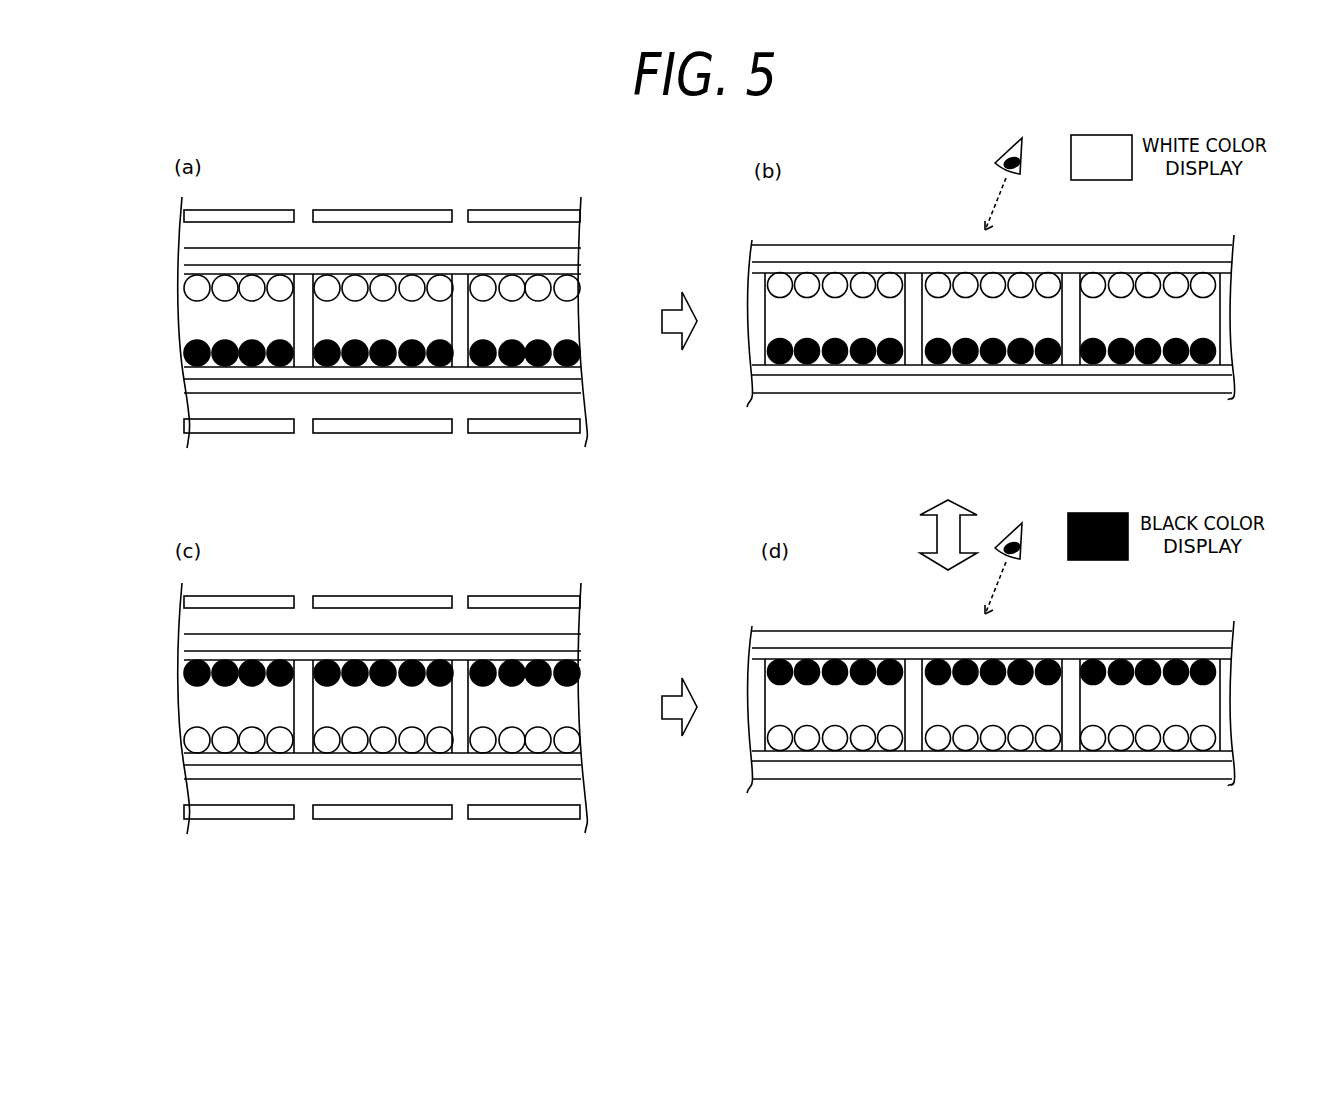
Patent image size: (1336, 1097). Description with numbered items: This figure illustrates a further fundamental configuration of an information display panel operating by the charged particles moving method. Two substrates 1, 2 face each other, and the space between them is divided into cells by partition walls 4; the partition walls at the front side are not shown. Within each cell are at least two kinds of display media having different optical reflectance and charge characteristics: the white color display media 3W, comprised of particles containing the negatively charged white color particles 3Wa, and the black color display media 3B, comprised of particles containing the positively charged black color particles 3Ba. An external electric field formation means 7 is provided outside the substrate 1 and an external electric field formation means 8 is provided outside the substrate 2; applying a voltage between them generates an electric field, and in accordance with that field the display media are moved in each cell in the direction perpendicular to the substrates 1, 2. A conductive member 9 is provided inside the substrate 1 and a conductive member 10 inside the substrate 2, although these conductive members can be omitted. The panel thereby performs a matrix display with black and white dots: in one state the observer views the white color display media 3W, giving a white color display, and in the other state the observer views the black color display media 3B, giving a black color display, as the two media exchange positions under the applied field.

The substrate 1 is at (303, 387).
The substrate 2 is at (305, 255).
The white color display media 3W is at (591, 275).
The black color display media 3B is at (591, 340).
The white color particle 3Wa is at (515, 283).
The black color particle 3Ba is at (522, 367).
The partition wall 4 is at (300, 323).
The external electric field formation means 7 is at (385, 435).
The external electric field formation means 8 is at (377, 214).
The conductive member 9 is at (463, 373).
The conductive member 10 is at (458, 270).